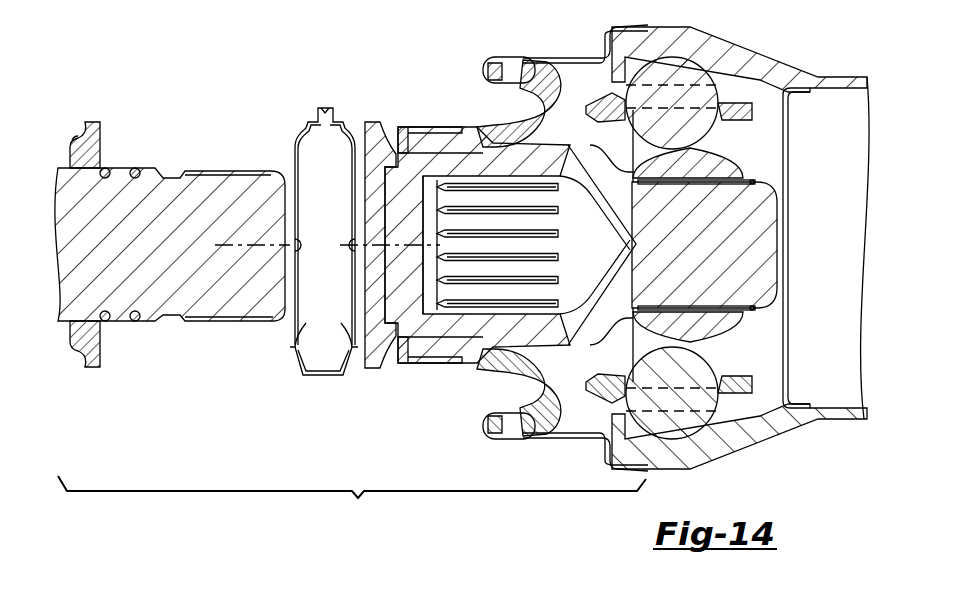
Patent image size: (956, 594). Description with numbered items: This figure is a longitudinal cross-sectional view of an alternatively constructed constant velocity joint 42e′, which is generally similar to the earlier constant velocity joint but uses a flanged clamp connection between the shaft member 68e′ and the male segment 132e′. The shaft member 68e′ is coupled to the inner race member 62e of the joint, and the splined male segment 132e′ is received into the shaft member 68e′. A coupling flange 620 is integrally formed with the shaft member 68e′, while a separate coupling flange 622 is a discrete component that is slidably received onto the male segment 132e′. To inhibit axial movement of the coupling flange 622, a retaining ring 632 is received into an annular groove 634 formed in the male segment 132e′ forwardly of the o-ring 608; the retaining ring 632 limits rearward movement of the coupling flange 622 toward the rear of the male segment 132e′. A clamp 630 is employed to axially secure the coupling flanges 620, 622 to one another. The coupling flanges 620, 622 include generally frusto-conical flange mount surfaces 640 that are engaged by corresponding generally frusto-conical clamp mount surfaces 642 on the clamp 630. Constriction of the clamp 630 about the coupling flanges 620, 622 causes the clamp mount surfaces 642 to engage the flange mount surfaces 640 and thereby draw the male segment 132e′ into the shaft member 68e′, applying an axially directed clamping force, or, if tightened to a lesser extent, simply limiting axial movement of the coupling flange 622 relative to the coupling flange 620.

The male segment 132e′ is at (240, 288).
The coupling flange 622 is at (100, 150).
The flange mount surfaces 640 is at (73, 140).
The retaining ring 632 is at (106, 180).
The o-ring 608 is at (136, 180).
The annular groove 634 is at (105, 310).
The clamp 630 is at (338, 100).
The clamp mount surfaces 642 is at (324, 341).
The coupling flange 620 is at (376, 342).
The shaft member 68e′ is at (522, 158).
The inner race member 62e is at (738, 175).
The constant velocity joint 42e′ is at (352, 499).